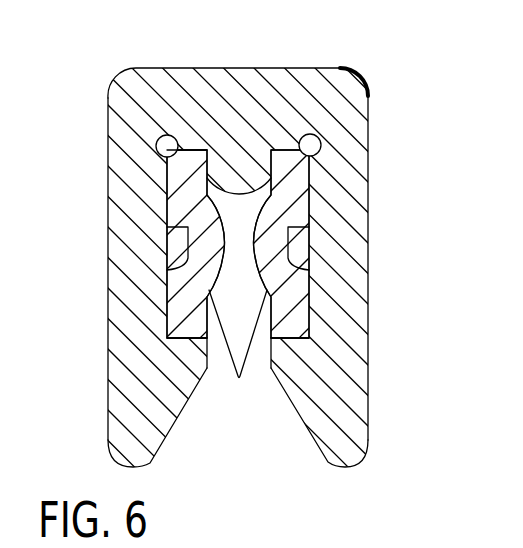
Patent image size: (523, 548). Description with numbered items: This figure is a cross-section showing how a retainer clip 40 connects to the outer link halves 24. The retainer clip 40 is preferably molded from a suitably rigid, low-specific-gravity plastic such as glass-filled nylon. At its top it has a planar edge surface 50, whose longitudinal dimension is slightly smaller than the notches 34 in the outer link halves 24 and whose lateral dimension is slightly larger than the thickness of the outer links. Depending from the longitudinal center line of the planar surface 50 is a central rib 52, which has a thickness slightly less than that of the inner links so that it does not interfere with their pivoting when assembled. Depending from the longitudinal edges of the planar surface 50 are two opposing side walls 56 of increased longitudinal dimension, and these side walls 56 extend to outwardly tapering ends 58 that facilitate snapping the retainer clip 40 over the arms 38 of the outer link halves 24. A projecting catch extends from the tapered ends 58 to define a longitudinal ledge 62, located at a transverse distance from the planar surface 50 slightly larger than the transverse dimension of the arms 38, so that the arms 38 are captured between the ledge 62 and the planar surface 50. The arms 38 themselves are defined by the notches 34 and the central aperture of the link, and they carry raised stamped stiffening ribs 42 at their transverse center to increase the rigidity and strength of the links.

The retainer clip 40 is at (368, 135).
The planar edge surface 50 is at (324, 68).
The side walls 56 is at (109, 273).
The outwardly tapering ends 58 is at (152, 463).
The outer link halves 24 is at (167, 228).
The arms 38 is at (164, 157).
The notches 34 is at (195, 149).
The longitudinal ledge 62 is at (184, 338).
The central rib 52 is at (237, 198).
The stiffening ribs 42 is at (238, 351).